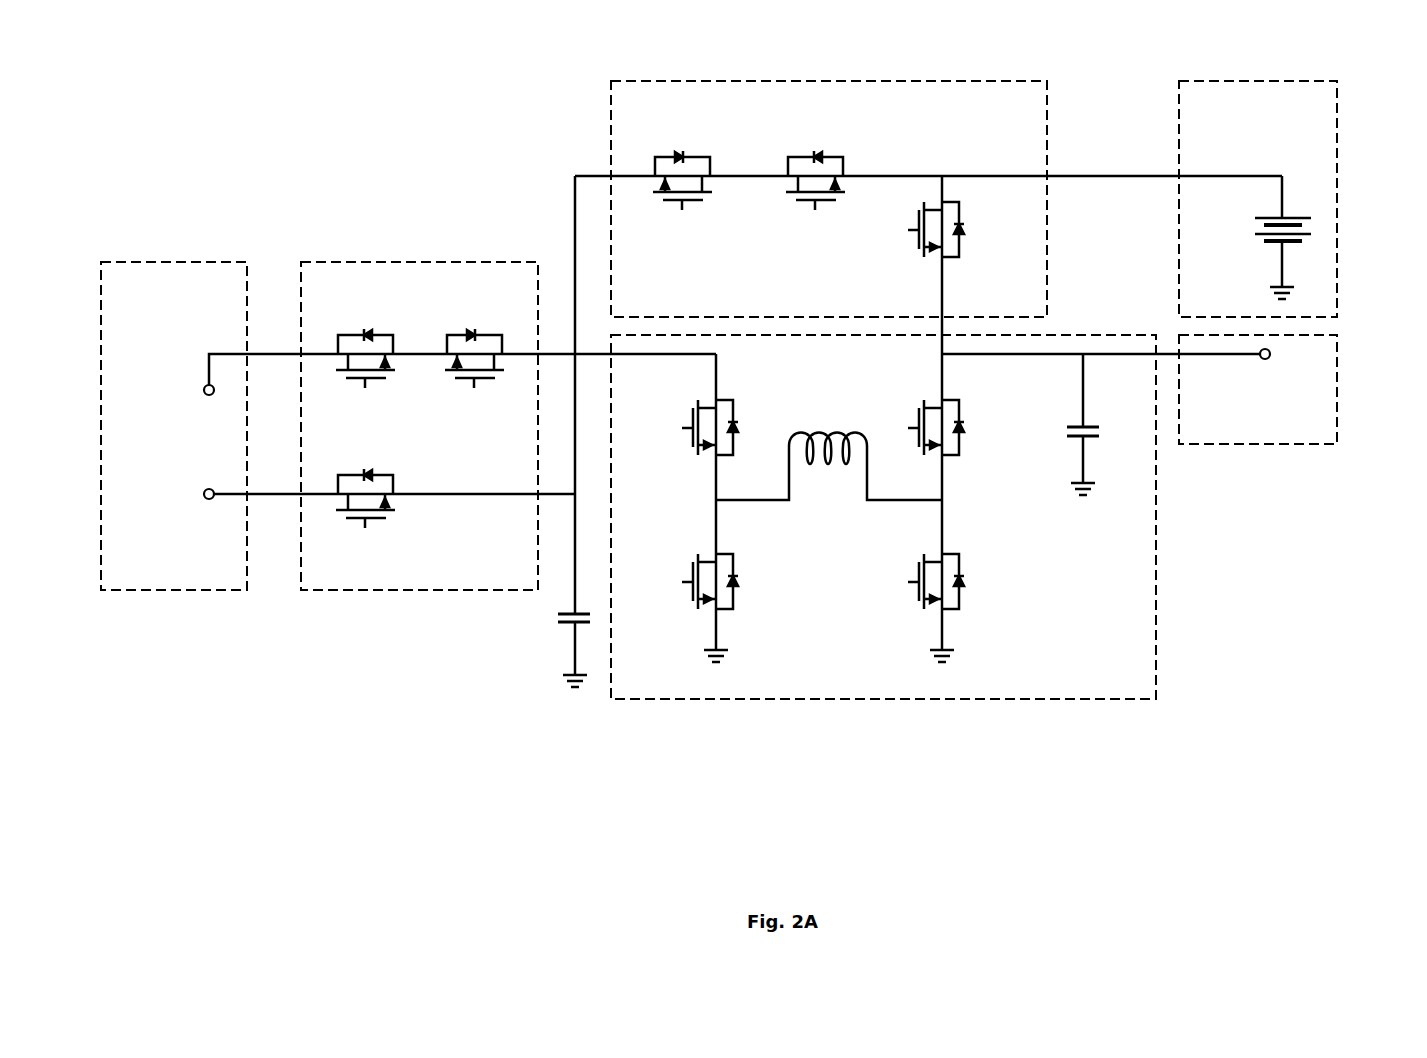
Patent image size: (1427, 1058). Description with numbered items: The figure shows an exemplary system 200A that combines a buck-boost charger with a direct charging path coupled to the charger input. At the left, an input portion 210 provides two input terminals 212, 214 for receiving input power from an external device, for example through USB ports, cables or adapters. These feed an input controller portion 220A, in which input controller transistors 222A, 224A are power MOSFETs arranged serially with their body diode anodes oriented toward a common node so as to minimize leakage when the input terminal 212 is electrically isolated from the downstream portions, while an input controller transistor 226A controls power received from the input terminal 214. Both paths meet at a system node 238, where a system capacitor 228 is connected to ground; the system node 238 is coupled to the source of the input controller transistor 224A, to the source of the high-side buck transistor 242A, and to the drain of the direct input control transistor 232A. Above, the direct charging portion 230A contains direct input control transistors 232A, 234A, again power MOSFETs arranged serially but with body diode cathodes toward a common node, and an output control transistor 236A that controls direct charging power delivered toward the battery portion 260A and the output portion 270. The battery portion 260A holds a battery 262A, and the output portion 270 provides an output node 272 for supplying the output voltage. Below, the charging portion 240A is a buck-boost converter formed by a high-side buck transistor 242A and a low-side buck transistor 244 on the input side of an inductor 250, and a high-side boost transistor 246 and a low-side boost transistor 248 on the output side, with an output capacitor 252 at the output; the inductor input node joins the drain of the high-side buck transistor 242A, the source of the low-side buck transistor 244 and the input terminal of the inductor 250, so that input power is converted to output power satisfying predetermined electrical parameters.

The system 200A is at (1426, 36).
The input portion 210 is at (193, 583).
The input terminal 212 is at (356, 377).
The input terminal 214 is at (356, 493).
The input controller portion 220A is at (525, 583).
The input controller transistor 222A is at (365, 337).
The input controller transistor 224A is at (474, 337).
The input controller transistor 226A is at (365, 521).
The system capacitor 228 is at (555, 650).
The direct charging portion 230A is at (672, 309).
The direct input control transistor 232A is at (682, 162).
The direct input control transistor 234A is at (815, 162).
The output control transistor 236A is at (962, 265).
The system node 238 is at (562, 176).
The charging portion 240A is at (1143, 692).
The high-side buck transistor 242A is at (681, 427).
The low-side buck transistor 244 is at (684, 581).
The high-side boost transistor 246 is at (961, 427).
The low-side boost transistor 248 is at (961, 581).
The inductor 250 is at (829, 481).
The output capacitor 252 is at (1101, 424).
The battery portion 260A is at (1279, 108).
The battery 262A is at (1256, 237).
The output portion 270 is at (1232, 436).
The output node 272 is at (1265, 374).